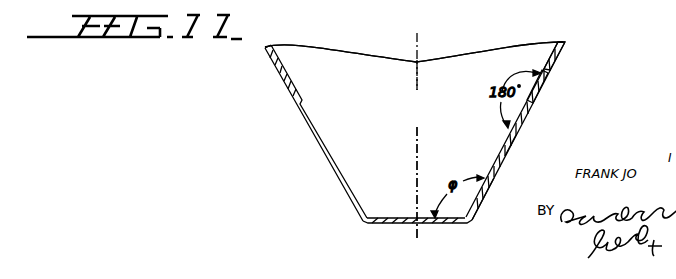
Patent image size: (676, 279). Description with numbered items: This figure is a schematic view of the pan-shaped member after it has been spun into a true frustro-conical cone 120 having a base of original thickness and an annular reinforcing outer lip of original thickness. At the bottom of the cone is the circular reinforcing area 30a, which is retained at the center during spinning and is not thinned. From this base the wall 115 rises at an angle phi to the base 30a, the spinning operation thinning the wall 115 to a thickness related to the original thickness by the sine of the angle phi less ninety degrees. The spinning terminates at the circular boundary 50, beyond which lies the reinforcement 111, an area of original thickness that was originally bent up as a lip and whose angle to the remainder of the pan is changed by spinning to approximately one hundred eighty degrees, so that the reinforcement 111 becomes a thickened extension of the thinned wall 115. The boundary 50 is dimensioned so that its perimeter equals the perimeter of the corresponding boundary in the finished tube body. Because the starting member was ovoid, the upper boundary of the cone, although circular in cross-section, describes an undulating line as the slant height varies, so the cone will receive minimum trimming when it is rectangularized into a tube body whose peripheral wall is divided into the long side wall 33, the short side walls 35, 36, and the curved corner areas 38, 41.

The reinforcing area 30a is at (433, 228).
The long side wall 33 is at (408, 150).
The short side wall 35 is at (524, 135).
The short side wall 36 is at (318, 143).
The corner area 38 is at (303, 43).
The corner area 41 is at (542, 42).
The circular boundary 50 is at (537, 97).
The reinforcement 111 is at (560, 66).
The wall 115 is at (506, 153).
The cone 120 is at (488, 203).